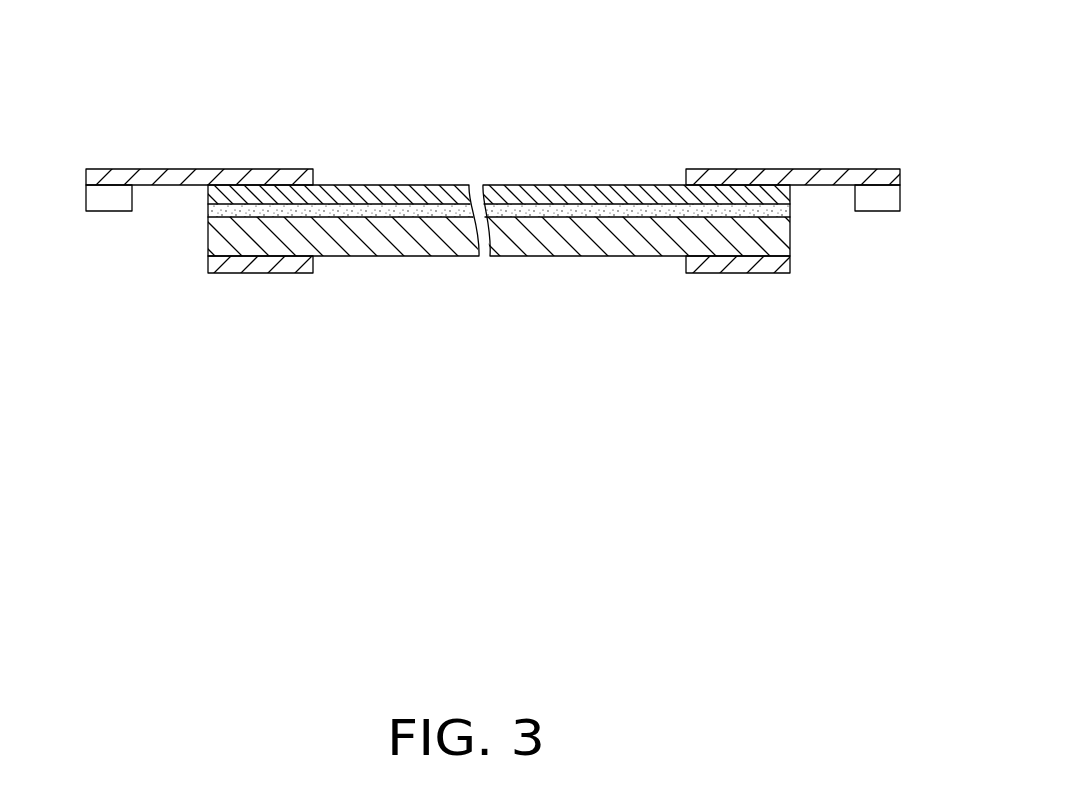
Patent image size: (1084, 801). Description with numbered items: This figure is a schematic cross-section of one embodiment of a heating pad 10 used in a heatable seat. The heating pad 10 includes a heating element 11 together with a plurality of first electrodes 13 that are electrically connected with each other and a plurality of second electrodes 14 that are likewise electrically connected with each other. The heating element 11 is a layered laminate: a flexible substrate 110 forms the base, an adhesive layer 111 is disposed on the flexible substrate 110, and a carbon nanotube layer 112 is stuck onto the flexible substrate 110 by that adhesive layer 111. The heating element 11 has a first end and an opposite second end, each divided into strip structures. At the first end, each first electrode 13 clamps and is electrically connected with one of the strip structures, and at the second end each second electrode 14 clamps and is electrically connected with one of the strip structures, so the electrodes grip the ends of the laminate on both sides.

The heating pad 10 is at (472, 58).
The heating element 11 is at (500, 302).
The first electrode 13 is at (143, 175).
The second electrode 14 is at (837, 175).
The flexible substrate 110 is at (623, 379).
The adhesive layer 111 is at (538, 213).
The carbon nanotube layer 112 is at (603, 195).